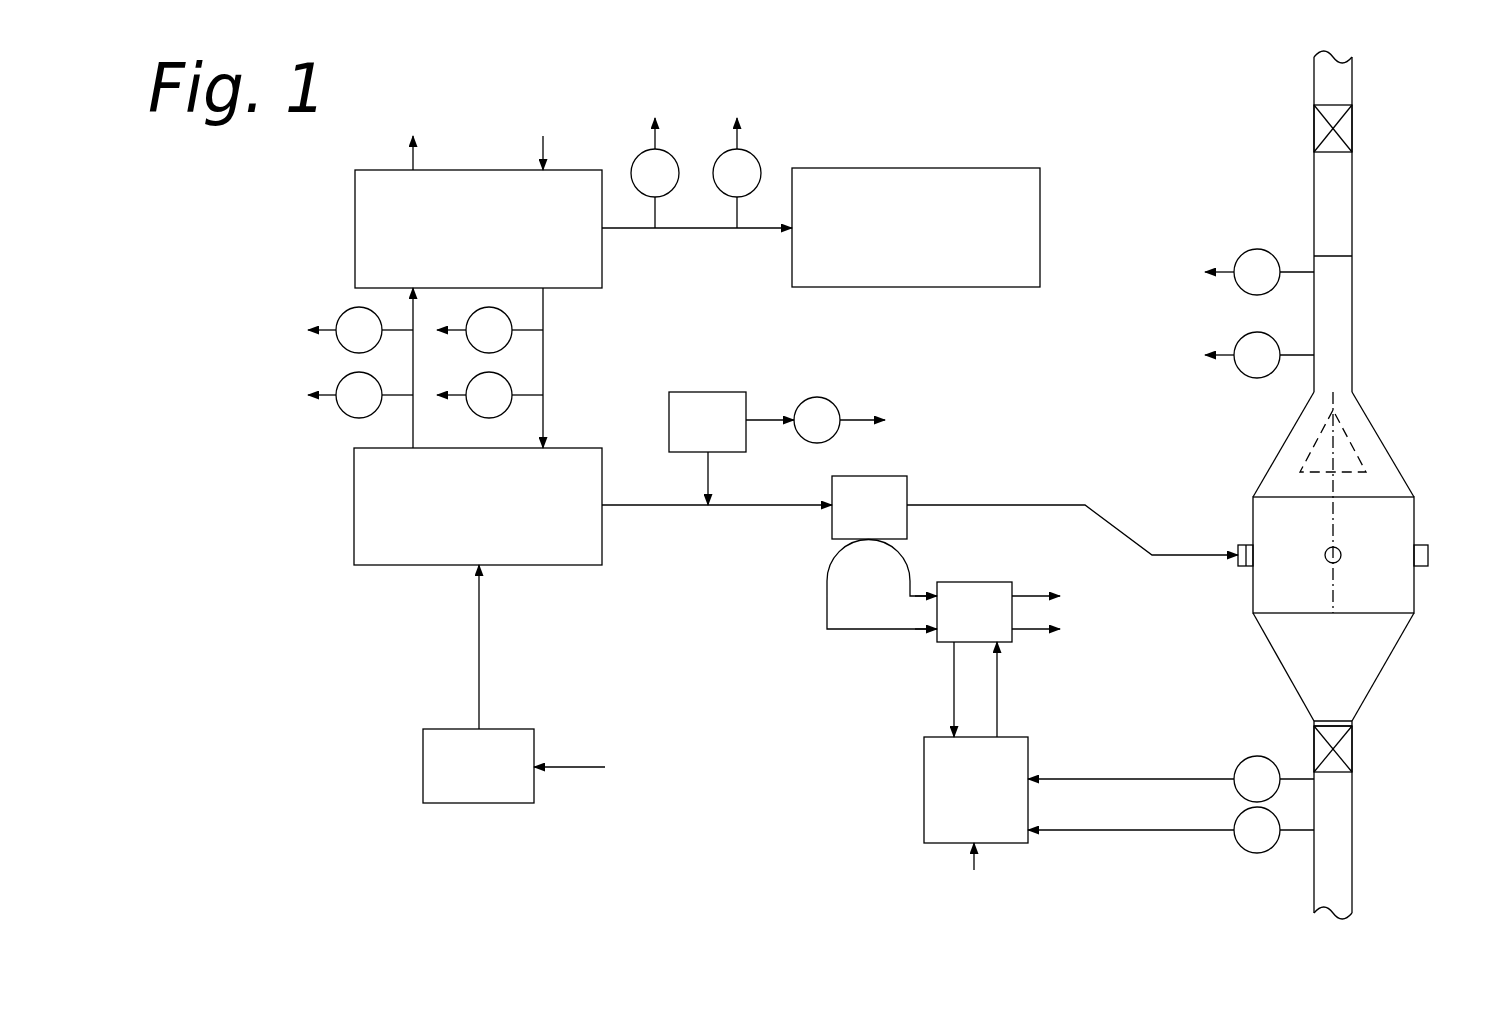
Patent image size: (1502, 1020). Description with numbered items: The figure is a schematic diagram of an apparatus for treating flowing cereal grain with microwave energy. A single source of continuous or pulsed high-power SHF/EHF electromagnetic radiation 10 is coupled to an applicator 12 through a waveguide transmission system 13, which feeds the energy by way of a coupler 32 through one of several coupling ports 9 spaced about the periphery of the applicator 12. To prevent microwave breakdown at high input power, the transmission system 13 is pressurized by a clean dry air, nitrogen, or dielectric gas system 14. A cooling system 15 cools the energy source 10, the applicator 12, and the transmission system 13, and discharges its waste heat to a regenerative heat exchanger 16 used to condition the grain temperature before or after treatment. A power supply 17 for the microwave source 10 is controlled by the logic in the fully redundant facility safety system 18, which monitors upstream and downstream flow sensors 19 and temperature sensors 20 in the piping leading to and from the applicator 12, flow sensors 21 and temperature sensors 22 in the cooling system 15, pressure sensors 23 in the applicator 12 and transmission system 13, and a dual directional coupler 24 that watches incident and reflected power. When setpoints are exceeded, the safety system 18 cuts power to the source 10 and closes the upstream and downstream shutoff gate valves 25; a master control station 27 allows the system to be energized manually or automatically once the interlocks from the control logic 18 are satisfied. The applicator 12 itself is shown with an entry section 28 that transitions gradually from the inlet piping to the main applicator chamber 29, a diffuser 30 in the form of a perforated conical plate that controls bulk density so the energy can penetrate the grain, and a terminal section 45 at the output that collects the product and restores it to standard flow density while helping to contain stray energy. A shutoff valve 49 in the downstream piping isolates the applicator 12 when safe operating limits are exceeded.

The coupling port 9 is at (1238, 568).
The source of high-power SHF/EHF electromagnetic radiation 10 is at (490, 523).
The applicator 12 is at (1377, 598).
The waveguide transmission system 13 is at (742, 510).
The dielectric gas system 14 is at (720, 438).
The cooling system 15 is at (490, 246).
The regenerative heat exchanger 16 is at (927, 246).
The power supply 17 is at (490, 783).
The facility safety system 18 is at (987, 806).
The flow sensor 19 is at (1243, 370).
The temperature sensor 20 is at (1243, 288).
The flow sensor 21 is at (641, 162).
The temperature sensor 22 is at (723, 162).
The pressure sensor 23 is at (819, 396).
The dual directional coupler 24 is at (343, 379).
The shutoff gate valve 25 is at (343, 314).
The master control station 27 is at (986, 623).
The entry section 28 is at (1388, 452).
The main applicator chamber 29 is at (1420, 525).
The diffuser 30 is at (1398, 398).
The coupler 32 is at (1240, 540).
The terminal section 45 is at (1376, 688).
The shutoff valve 49 is at (1350, 752).